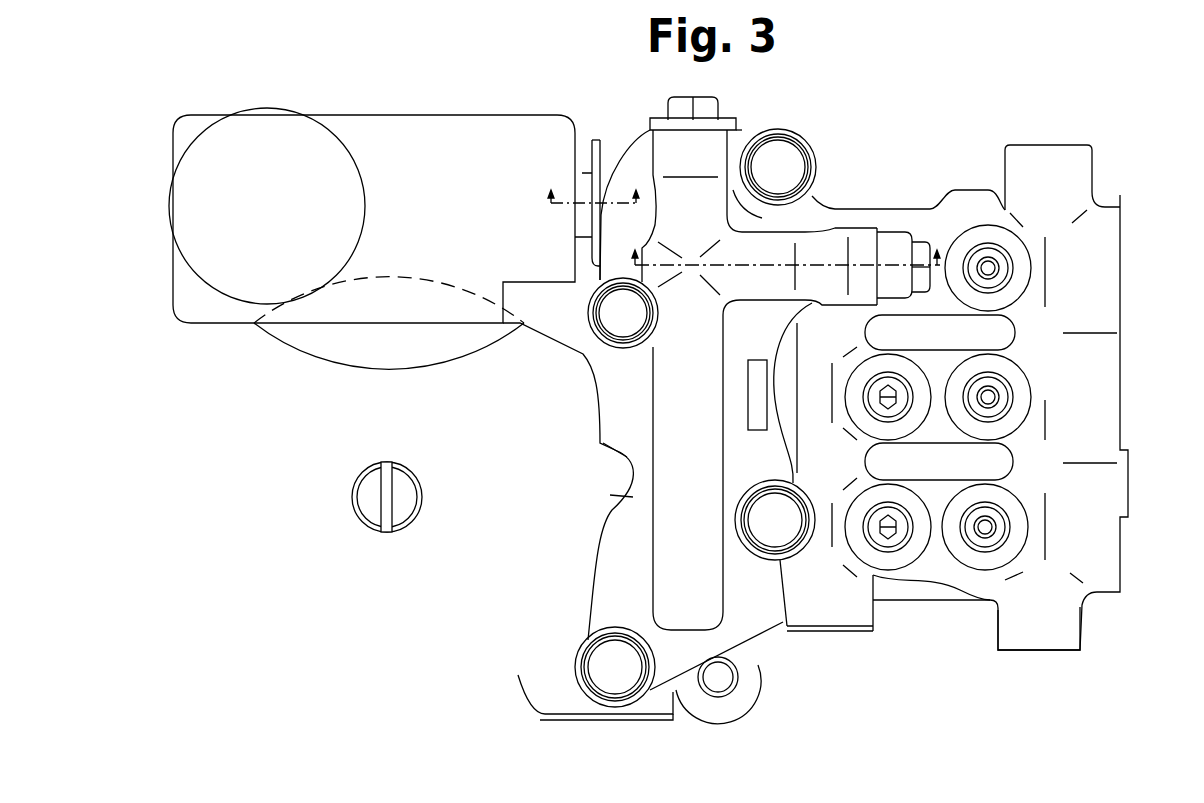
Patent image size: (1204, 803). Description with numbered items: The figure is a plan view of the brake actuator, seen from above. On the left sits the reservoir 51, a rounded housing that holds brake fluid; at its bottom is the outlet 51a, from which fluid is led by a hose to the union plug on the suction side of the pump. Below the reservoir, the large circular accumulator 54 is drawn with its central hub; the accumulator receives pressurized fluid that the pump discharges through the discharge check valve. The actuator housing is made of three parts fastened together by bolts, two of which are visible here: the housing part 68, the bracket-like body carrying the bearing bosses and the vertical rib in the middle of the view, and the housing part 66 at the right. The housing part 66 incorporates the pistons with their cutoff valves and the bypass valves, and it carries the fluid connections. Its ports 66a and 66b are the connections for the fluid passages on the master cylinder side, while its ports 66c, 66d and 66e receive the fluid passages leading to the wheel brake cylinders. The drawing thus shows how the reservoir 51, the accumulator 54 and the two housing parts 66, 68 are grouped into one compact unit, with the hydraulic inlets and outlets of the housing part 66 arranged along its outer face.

The reservoir 51 is at (438, 116).
The outlet 51a is at (582, 173).
The accumulator 54 is at (258, 676).
The housing part 66 is at (1085, 367).
The port 66a is at (1023, 652).
The port 66b is at (1065, 147).
The port 66c is at (983, 530).
The port 66d is at (993, 398).
The port 66e is at (988, 265).
The housing part 68 is at (750, 593).